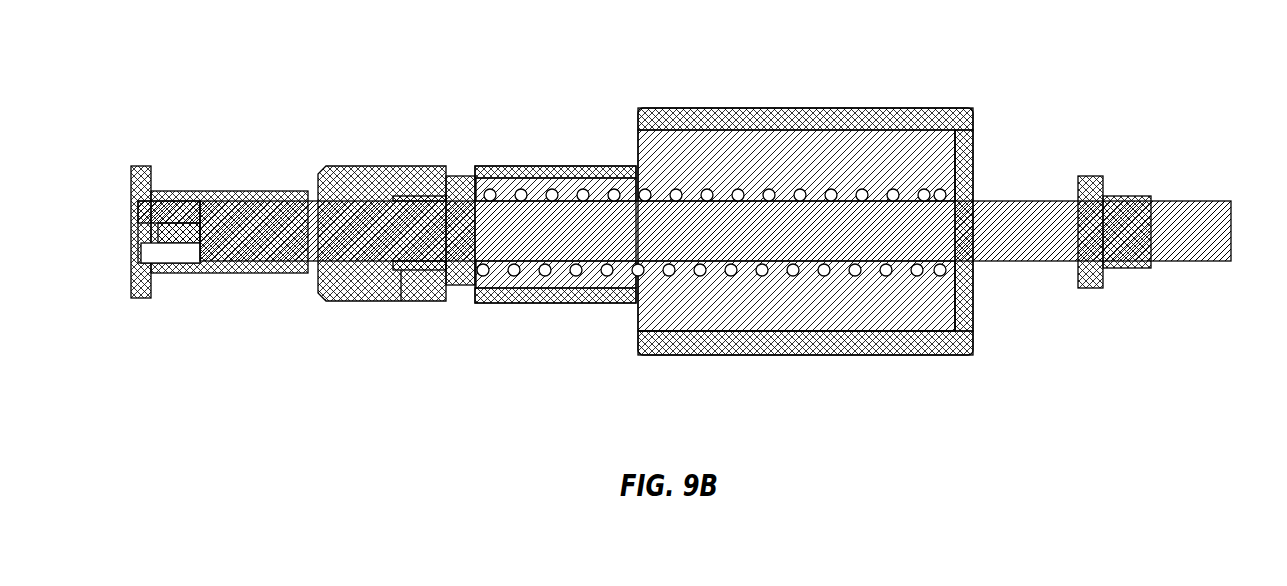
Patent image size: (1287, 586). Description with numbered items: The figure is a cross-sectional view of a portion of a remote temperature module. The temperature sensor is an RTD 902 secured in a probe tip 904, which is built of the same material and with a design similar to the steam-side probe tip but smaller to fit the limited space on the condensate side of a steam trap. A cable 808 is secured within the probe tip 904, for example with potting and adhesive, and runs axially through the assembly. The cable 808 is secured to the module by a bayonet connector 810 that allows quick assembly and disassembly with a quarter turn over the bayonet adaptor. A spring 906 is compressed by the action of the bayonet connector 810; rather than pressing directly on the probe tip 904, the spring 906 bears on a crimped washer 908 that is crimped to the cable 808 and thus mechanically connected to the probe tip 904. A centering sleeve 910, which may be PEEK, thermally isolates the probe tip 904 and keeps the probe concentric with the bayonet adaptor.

The cable 808 is at (1173, 194).
The bayonet connector 810 is at (830, 100).
The RTD 902 is at (130, 222).
The probe tip 904 is at (123, 274).
The spring 906 is at (788, 186).
The crimped washer 908 is at (452, 168).
The centering sleeve 910 is at (314, 158).